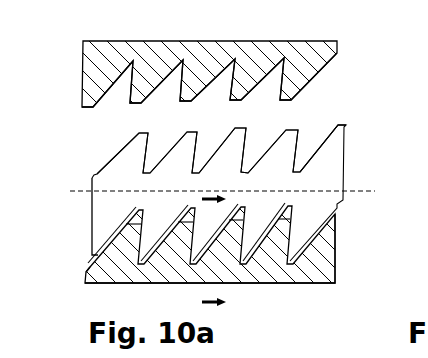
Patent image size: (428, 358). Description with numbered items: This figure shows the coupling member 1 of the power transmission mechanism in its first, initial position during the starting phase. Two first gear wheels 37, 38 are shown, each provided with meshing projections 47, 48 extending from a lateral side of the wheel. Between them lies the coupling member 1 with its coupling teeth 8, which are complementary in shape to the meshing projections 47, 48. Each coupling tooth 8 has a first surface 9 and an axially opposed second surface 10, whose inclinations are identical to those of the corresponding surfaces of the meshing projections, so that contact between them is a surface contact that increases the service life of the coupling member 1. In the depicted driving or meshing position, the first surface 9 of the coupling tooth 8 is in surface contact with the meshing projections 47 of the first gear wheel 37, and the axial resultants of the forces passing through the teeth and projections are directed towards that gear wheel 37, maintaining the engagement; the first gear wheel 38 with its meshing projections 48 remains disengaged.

The coupling member 1 is at (103, 208).
The coupling tooth 8 is at (336, 145).
The first surface 9 is at (350, 133).
The second surface 10 is at (320, 145).
The first gear wheel 37 is at (90, 274).
The first gear wheel 38 is at (95, 73).
The meshing projection 47 is at (333, 242).
The meshing projection 48 is at (315, 71).